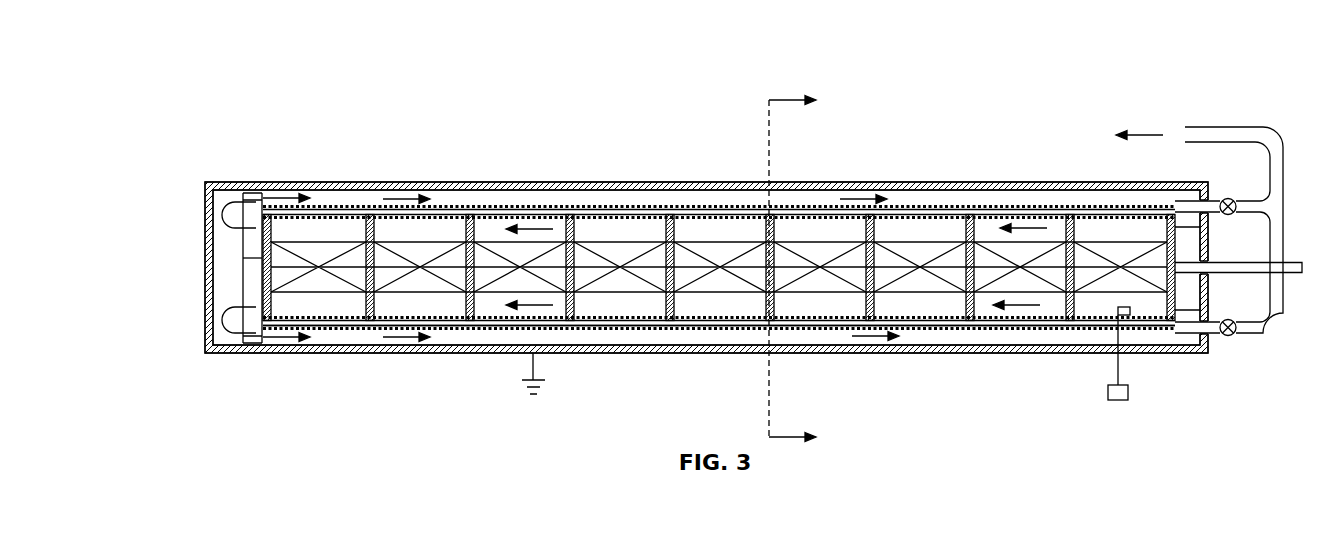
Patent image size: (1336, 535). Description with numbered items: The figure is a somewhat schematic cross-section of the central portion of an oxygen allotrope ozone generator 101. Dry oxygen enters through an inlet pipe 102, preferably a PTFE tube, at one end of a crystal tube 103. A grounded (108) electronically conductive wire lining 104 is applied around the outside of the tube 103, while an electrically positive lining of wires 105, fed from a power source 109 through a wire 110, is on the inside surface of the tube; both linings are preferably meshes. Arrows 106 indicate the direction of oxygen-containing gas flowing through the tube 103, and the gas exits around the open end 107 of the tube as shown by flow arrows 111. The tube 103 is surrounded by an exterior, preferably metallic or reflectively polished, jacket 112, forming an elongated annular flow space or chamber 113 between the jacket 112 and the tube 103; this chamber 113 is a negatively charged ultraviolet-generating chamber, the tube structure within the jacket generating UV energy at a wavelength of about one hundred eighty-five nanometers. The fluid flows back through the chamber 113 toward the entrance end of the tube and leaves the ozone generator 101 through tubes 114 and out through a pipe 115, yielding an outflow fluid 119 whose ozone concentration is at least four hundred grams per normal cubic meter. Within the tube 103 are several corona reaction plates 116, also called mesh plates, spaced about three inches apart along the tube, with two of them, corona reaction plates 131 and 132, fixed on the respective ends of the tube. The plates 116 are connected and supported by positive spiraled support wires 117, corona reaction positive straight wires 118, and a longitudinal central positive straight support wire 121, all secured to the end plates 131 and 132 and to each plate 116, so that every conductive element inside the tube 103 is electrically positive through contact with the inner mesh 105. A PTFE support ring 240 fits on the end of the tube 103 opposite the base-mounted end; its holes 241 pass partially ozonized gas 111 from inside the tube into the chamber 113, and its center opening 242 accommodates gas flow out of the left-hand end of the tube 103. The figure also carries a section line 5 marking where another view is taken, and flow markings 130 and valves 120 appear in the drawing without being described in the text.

The ozone generator 101 is at (560, 96).
The inlet pipe 102 is at (1248, 274).
The crystal tube 103 is at (995, 322).
The electronically conductive wire lining 104 is at (898, 327).
The electrically positive lining of wires 105 is at (722, 320).
The arrows 106 is at (530, 226).
The open end 107 is at (257, 304).
The ground 108 is at (531, 364).
The power source 109 is at (1107, 418).
The wire 110 is at (1120, 368).
The flow arrows 111 is at (218, 212).
The jacket 112 is at (887, 190).
The flow space or chamber 113 is at (1013, 196).
The tubes 114 is at (1250, 198).
The pipe 115 is at (1213, 127).
The corona reaction plates 116 is at (778, 270).
The positive spiraled support wires 117 is at (420, 276).
The corona reaction positive straight wires 118 is at (456, 207).
The outflow fluid 119 is at (1185, 128).
The valve 120 is at (1230, 200).
The longitudinal central positive straight support wire 121 is at (347, 268).
The gas flow direction 130 is at (403, 196).
The corona reaction plate 131 is at (1167, 235).
The corona reaction plate 132 is at (273, 235).
The support ring 240 is at (250, 268).
The holes 241 is at (257, 207).
The center opening 242 is at (253, 258).
The section line 5- 5 is at (803, 270).